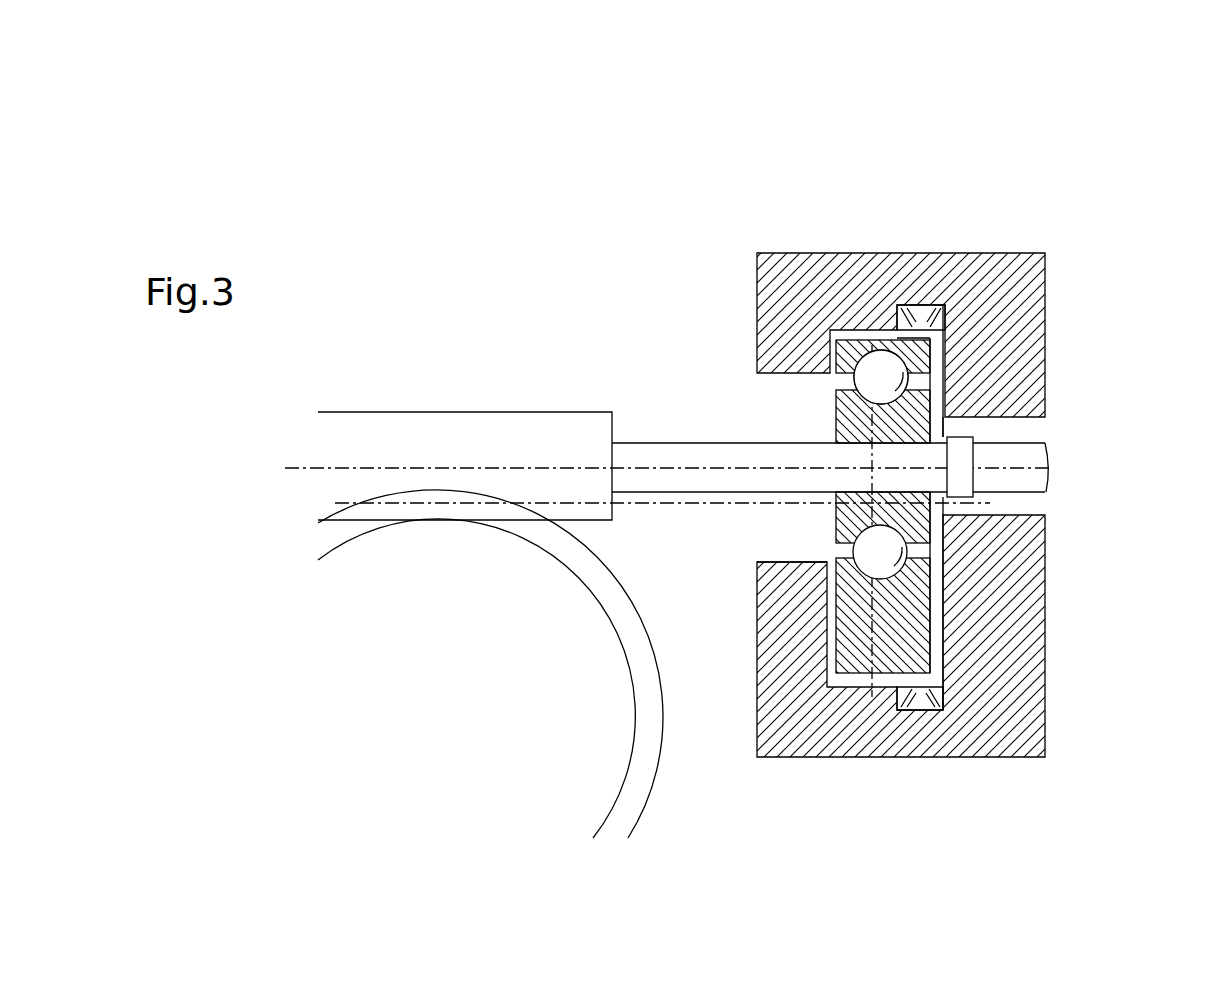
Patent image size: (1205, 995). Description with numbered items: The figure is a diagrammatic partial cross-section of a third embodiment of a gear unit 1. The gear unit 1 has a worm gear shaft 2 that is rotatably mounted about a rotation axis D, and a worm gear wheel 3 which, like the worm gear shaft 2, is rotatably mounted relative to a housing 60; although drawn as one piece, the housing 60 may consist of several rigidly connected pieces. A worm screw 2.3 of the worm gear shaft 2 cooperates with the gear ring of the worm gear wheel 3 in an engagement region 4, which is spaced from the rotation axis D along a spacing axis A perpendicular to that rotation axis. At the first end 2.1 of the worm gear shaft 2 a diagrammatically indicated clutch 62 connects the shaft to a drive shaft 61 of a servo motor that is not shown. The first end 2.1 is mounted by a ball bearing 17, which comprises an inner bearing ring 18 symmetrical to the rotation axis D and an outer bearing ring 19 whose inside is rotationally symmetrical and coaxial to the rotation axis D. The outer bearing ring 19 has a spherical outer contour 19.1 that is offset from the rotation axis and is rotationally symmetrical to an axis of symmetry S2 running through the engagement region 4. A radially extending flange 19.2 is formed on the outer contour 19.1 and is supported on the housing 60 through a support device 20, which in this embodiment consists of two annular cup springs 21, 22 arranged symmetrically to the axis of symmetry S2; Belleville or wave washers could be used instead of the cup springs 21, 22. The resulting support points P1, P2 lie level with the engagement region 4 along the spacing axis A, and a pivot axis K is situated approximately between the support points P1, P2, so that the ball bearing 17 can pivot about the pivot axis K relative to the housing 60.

The gear unit 1 is at (553, 148).
The worm gear shaft 2 is at (672, 443).
The first end 2.1 is at (937, 413).
The worm screw 2.3 is at (481, 395).
The worm gear wheel 3 is at (429, 692).
The engagement region 4 is at (410, 493).
The ball bearing 17 is at (798, 553).
The inner bearing ring 18 is at (870, 405).
The outer bearing ring 19 is at (855, 405).
The spherical outer contour 19.1 is at (860, 350).
The radially extending flange 19.2 is at (923, 317).
The support device 20 is at (948, 716).
The cup spring 21 is at (898, 318).
The cup spring 22 is at (948, 317).
The housing 60 is at (1023, 309).
The drive shaft 61 is at (1043, 485).
The clutch 62 is at (967, 457).
The rotation axis D is at (638, 468).
The axis of symmetry S2 is at (662, 505).
The pivot axis K is at (925, 497).
The support point P1 is at (925, 497).
The support point P2 is at (935, 495).
The spacing axis A is at (910, 677).